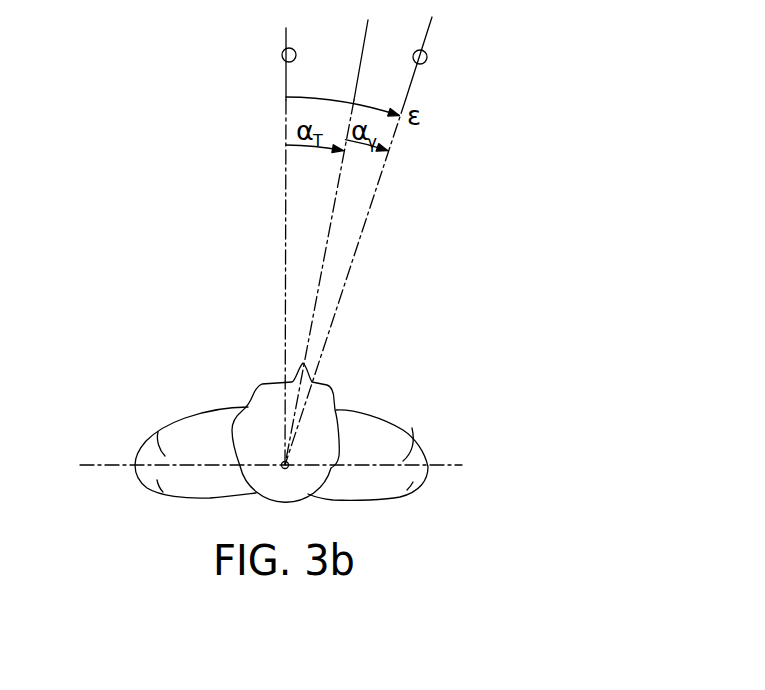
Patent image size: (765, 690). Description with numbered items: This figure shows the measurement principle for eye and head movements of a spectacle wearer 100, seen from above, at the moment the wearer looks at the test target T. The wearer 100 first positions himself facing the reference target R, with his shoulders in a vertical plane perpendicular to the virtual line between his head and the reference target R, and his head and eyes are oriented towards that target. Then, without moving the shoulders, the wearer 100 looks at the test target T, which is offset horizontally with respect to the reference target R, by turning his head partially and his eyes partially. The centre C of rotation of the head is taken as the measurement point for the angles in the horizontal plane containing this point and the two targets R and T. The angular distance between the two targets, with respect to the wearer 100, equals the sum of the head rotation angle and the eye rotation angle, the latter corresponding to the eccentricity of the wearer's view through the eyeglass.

The wearer 100 is at (392, 401).
The reference target R is at (282, 53).
The test target T is at (439, 38).
The centre of rotation of the head C is at (281, 463).